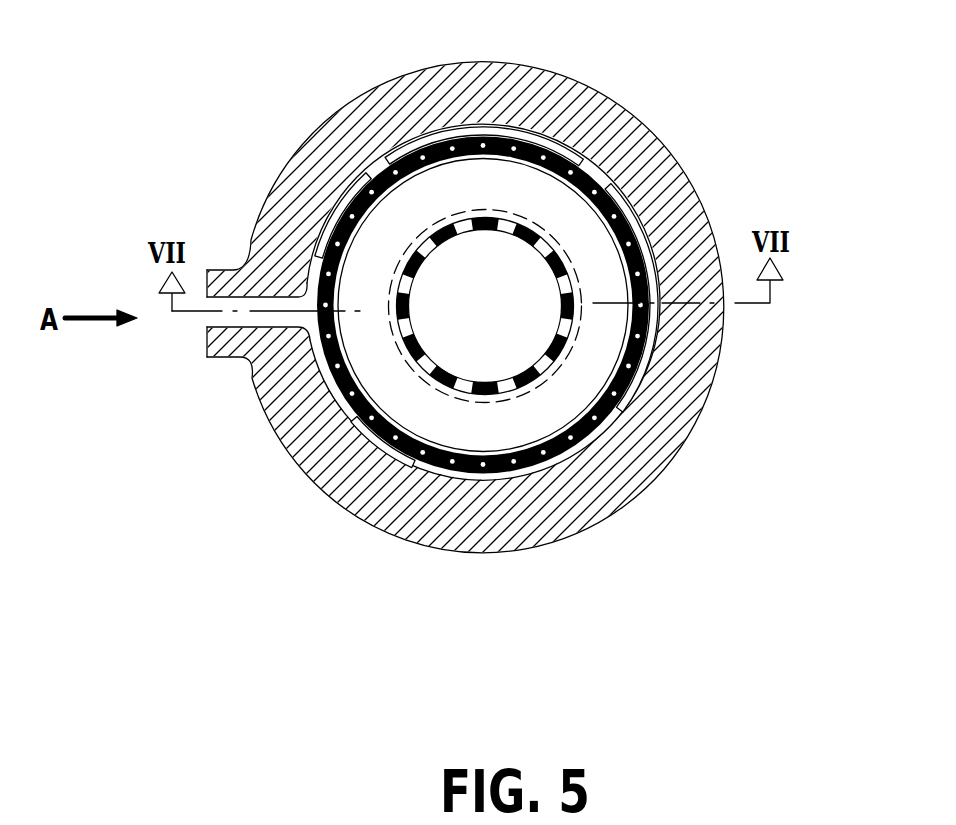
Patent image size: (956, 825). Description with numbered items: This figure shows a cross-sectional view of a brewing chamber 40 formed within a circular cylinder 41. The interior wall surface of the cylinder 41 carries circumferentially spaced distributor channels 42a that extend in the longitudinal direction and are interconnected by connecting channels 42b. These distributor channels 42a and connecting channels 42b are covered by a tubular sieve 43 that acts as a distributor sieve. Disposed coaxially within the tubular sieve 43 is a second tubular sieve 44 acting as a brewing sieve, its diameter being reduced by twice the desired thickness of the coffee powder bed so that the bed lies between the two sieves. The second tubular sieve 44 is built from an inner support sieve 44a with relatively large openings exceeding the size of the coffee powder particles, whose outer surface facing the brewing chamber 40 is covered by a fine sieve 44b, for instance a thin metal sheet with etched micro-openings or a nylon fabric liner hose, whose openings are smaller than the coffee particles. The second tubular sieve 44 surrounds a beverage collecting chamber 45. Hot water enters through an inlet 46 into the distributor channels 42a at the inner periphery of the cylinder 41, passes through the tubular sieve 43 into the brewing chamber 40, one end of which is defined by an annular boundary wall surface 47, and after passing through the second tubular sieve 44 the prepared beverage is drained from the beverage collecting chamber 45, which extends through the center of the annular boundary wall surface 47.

The brewing chamber 40 is at (465, 412).
The circular cylinder 41 is at (623, 155).
The distributor channels 42a is at (640, 232).
The connecting channels 42b is at (400, 405).
The tubular sieve 43 is at (375, 427).
The second tubular sieve 44 is at (517, 390).
The inner support sieve 44a is at (572, 292).
The fine sieve 44b is at (572, 340).
The beverage collecting chamber 45 is at (502, 314).
The inlet 46 is at (220, 303).
The annular boundary wall surface 47 is at (449, 204).